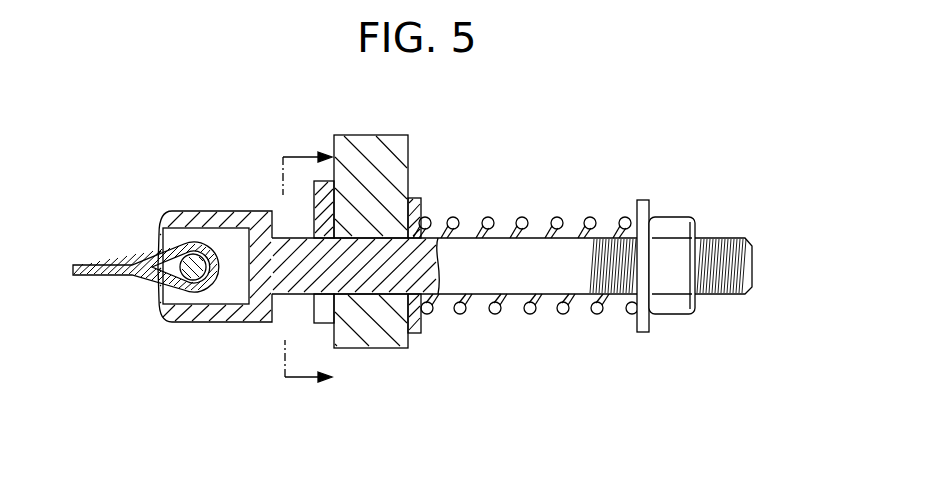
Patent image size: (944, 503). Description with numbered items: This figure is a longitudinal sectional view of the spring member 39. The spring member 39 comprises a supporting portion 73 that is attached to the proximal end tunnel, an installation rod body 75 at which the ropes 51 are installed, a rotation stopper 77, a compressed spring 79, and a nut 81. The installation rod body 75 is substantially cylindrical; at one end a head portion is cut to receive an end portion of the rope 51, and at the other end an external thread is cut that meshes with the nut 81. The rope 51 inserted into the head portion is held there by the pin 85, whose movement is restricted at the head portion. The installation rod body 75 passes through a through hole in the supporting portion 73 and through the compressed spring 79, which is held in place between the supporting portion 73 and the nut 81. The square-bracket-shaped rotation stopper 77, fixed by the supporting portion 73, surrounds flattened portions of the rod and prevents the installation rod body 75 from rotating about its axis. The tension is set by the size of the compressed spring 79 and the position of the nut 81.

The spring member 39 is at (563, 376).
The rope 51 is at (110, 265).
The supporting portion 73 is at (408, 153).
The installation rod body 75 is at (481, 295).
The rotation stopper 77 is at (323, 323).
The compressed spring 79 is at (523, 219).
The nut 81 is at (672, 228).
The pin 85 is at (192, 272).